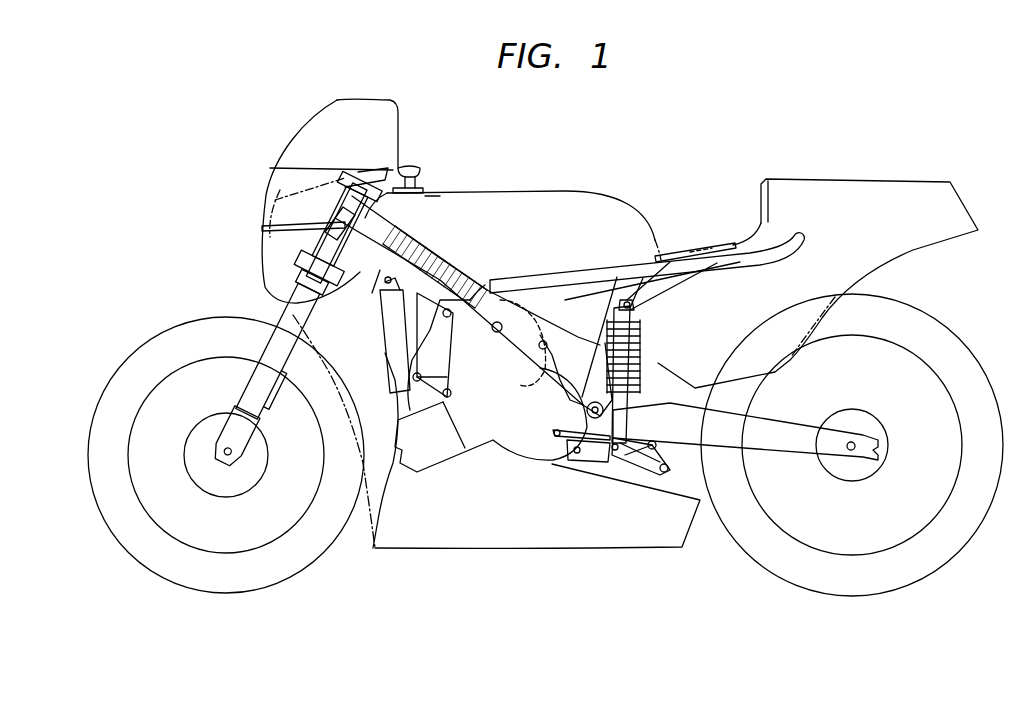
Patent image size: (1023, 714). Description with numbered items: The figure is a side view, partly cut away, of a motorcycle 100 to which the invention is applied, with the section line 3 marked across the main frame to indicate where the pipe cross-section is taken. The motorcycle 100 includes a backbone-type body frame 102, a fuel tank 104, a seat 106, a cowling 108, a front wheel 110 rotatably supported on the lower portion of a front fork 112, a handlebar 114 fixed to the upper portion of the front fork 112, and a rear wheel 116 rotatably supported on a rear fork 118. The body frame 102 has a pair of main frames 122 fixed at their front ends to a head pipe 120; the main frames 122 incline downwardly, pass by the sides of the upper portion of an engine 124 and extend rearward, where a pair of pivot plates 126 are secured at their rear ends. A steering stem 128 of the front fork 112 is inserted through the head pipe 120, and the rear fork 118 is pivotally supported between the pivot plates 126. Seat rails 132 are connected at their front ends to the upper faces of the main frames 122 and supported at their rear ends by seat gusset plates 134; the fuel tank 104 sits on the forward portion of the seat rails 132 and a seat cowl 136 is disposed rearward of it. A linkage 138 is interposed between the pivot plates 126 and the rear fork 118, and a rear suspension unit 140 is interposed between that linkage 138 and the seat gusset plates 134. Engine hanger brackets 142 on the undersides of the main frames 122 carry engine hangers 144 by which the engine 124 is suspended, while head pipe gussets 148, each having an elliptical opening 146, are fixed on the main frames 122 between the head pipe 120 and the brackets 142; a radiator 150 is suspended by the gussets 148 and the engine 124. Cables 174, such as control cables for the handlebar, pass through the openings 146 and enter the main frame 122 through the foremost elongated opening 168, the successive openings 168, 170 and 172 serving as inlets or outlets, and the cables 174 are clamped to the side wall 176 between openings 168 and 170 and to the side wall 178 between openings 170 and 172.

The motorcycle 100 is at (588, 118).
The body frame 102 is at (474, 258).
The fuel tank 104 is at (600, 195).
The seat 106 is at (713, 247).
The cowling 108 is at (288, 134).
The front wheel 110 is at (130, 362).
The front fork 112 is at (273, 338).
The handlebar 114 is at (418, 178).
The rear wheel 116 is at (963, 367).
The rear fork 118 is at (780, 427).
The head pipe 120 is at (335, 215).
The main frame 122 is at (580, 335).
The engine 124 is at (517, 447).
The pivot plate 126 is at (590, 453).
The steering stem 128 is at (381, 168).
The seat rail 132 is at (673, 265).
The seat gusset plate 134 is at (640, 283).
The seat cowl 136 is at (883, 190).
The linkage 138 is at (638, 480).
The rear suspension unit 140 is at (645, 363).
The engine hanger bracket 142 is at (430, 333).
The engine hanger 144 is at (370, 378).
The elliptical opening 146 is at (290, 313).
The head pipe gusset 148 is at (372, 298).
The radiator 150 is at (395, 465).
The elongated opening 168 is at (437, 195).
The elongated opening 170 is at (490, 272).
The elongated opening 172 is at (535, 350).
The cable 174 is at (479, 212).
The side wall 176 is at (437, 272).
The side wall 178 is at (531, 300).
The section line 3 is at (500, 270).